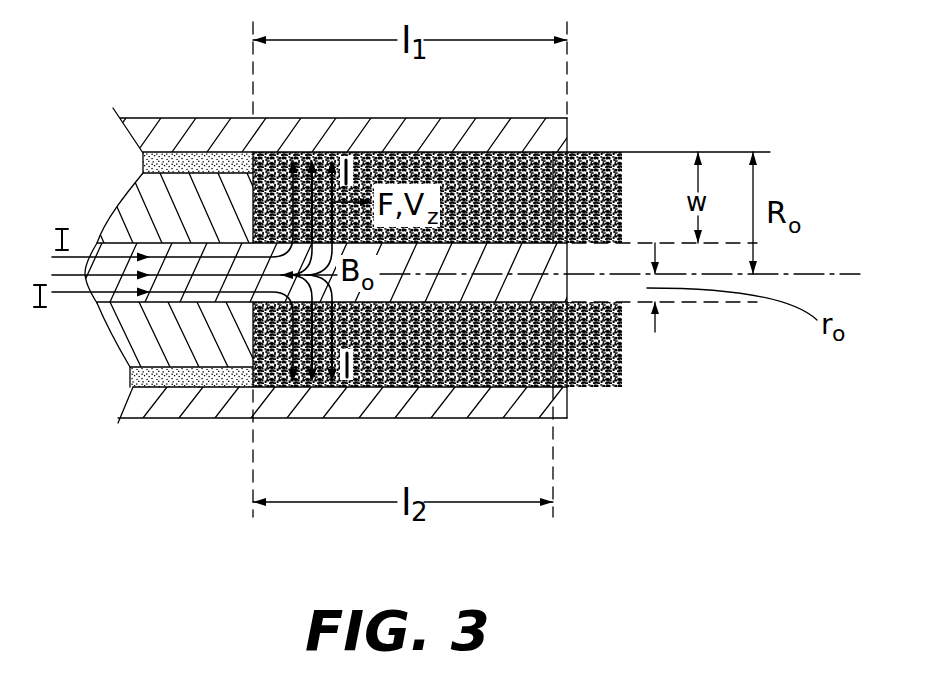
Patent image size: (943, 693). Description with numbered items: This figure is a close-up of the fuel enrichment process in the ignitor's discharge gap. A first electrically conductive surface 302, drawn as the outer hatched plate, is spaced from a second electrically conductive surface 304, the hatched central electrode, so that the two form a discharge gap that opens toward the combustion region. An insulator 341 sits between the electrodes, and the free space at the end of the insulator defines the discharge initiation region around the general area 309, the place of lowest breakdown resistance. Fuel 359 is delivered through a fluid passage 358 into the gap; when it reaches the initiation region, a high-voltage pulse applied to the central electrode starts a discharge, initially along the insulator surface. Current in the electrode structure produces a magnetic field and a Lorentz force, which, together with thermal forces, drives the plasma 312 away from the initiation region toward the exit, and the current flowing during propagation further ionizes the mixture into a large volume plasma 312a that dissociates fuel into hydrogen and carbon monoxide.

The first electrically conductive surface 302 is at (517, 158).
The second electrically conductive surface 304 is at (510, 297).
The discharge initiation region 309 is at (240, 386).
The plasma 312 is at (318, 379).
The large volume plasma 312a is at (560, 318).
The insulator 341 is at (273, 167).
The fluid passage 358 is at (168, 402).
The fuel 359 is at (150, 163).